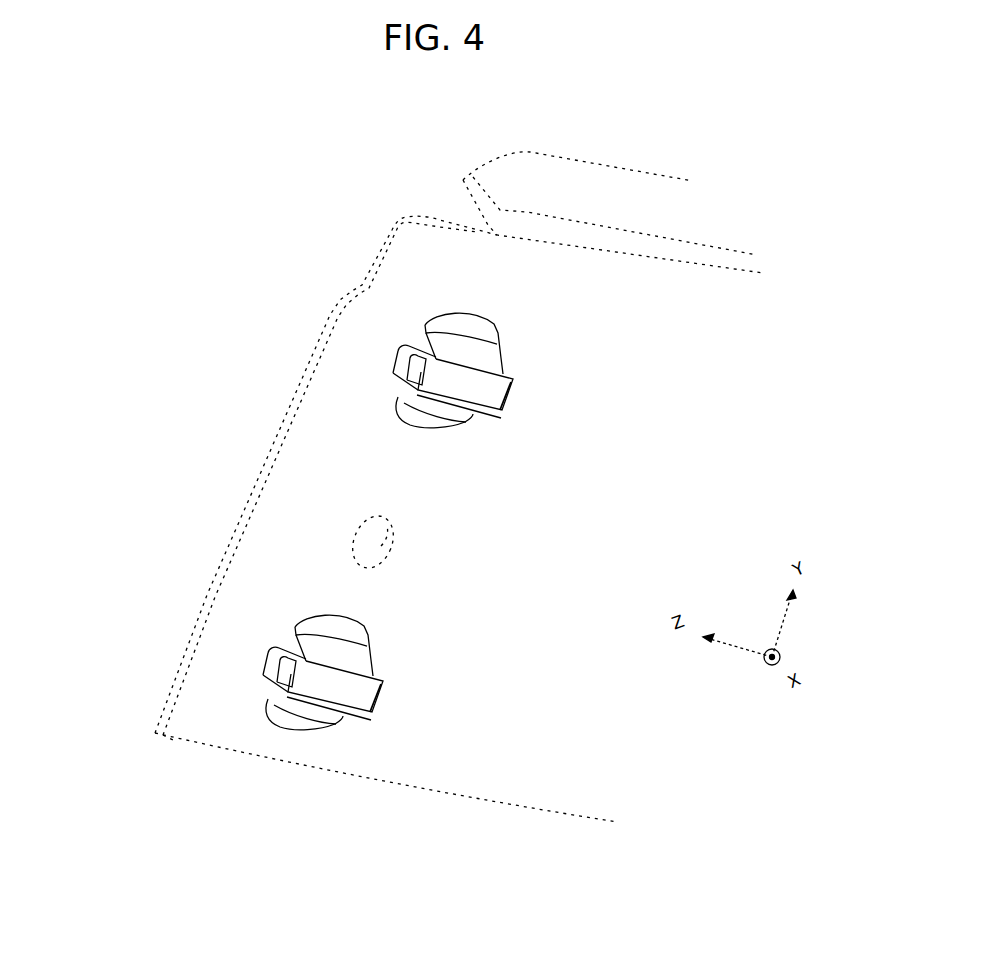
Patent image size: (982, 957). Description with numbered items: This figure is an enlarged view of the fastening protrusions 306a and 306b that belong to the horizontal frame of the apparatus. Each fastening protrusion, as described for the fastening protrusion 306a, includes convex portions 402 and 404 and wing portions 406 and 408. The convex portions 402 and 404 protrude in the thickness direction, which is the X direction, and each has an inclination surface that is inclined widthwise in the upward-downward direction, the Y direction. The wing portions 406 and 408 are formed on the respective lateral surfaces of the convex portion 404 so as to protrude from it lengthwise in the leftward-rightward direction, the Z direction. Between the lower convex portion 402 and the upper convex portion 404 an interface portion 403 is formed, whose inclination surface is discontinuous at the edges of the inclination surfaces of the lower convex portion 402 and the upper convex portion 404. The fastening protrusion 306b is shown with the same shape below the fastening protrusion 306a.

The fastening protrusion 306a is at (381, 334).
The fastening protrusion 306b is at (258, 633).
The convex portion 402 is at (464, 324).
The interface portion 403 is at (496, 344).
The convex portion 404 is at (483, 362).
The wing portion 406 is at (398, 362).
The wing portion 408 is at (480, 410).